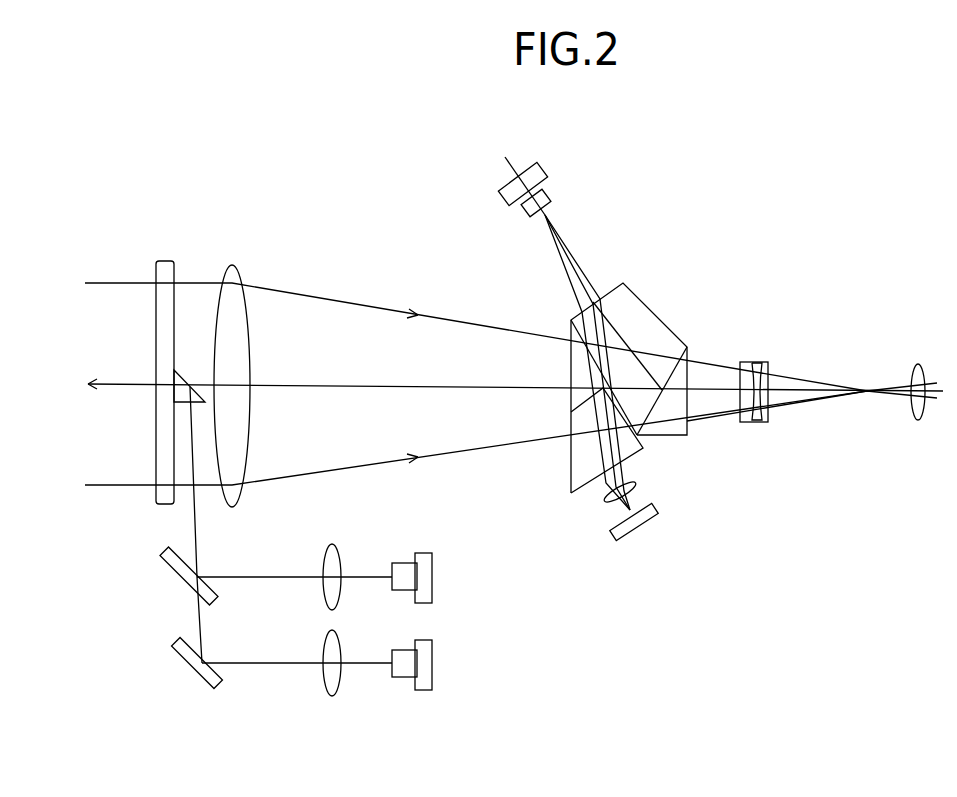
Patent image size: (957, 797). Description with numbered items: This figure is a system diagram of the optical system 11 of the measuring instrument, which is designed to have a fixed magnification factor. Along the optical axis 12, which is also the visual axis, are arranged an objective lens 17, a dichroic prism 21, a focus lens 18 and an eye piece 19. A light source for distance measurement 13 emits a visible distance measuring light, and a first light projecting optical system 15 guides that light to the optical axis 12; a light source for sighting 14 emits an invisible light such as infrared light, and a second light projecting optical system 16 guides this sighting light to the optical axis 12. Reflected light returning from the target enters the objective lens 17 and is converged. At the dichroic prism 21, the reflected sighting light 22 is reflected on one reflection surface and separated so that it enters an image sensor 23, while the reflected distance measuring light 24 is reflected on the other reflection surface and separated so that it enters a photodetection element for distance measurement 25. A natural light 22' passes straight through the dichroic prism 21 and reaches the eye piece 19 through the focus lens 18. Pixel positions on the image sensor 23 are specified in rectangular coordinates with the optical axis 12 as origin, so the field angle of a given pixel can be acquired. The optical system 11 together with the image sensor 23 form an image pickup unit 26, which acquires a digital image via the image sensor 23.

The optical system 11 is at (631, 250).
The optical axis 12 is at (285, 383).
The light source for distance measurement 13 is at (427, 553).
The light source for sighting 14 is at (427, 690).
The first light projecting optical system 15 is at (267, 558).
The second light projecting optical system 16 is at (265, 670).
The objective lens 17 is at (240, 270).
The focus lens 18 is at (760, 422).
The eye piece 19 is at (918, 363).
The dichroic prism 21 is at (642, 297).
The reflected sighting light 22 is at (665, 487).
The natural light 22' is at (777, 447).
The image sensor 23 is at (652, 518).
The reflected distance measuring light 24 is at (567, 272).
The photodetection element for distance measurement 25 is at (547, 168).
The image pickup unit 26 is at (578, 534).